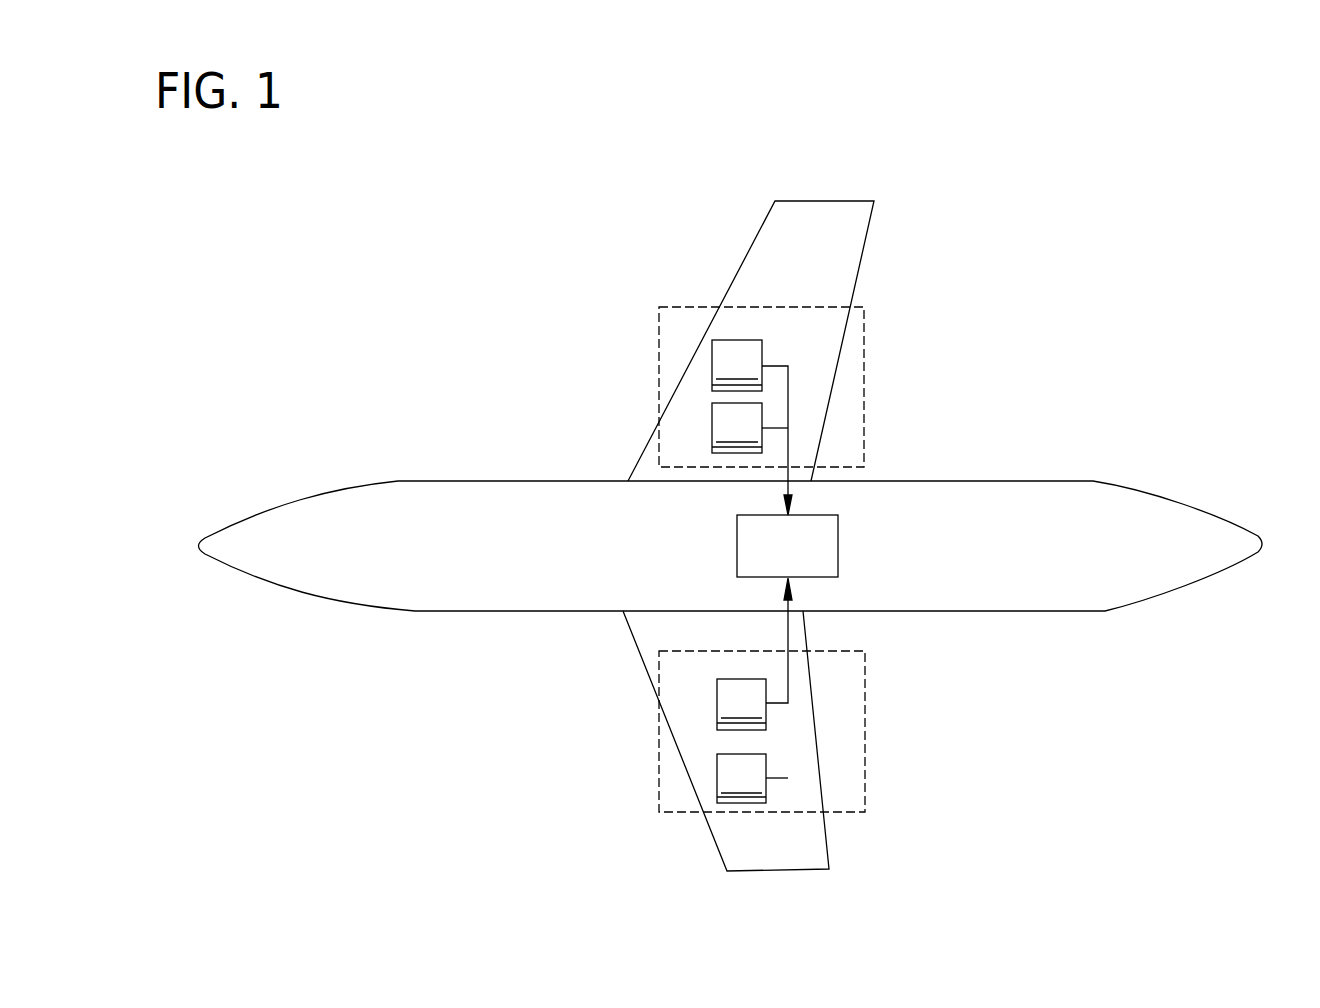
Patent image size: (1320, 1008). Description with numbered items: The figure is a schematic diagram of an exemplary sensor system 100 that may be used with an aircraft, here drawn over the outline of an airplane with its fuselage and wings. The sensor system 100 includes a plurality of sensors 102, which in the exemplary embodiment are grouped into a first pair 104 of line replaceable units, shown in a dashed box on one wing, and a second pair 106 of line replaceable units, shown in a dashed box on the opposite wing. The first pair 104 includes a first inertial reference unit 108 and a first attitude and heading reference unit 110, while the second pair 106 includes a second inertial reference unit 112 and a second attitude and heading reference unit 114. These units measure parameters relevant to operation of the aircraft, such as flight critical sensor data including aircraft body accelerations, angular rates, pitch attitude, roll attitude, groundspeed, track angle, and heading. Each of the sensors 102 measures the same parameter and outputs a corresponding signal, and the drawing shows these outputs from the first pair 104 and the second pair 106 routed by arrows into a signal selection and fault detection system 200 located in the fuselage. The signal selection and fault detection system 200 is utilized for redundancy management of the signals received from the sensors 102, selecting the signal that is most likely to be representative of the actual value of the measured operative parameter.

The sensor system 100 is at (367, 273).
The sensors 102 is at (737, 340).
The first pair of line replaceable units 104 is at (865, 340).
The second pair of line replaceable units 106 is at (865, 698).
The first inertial reference unit 108 is at (752, 427).
The first attitude and heading reference unit 110 is at (750, 428).
The second inertial reference unit 112 is at (754, 654).
The second attitude and heading reference unit 114 is at (752, 778).
The signal selection and fault detection system 200 is at (810, 558).